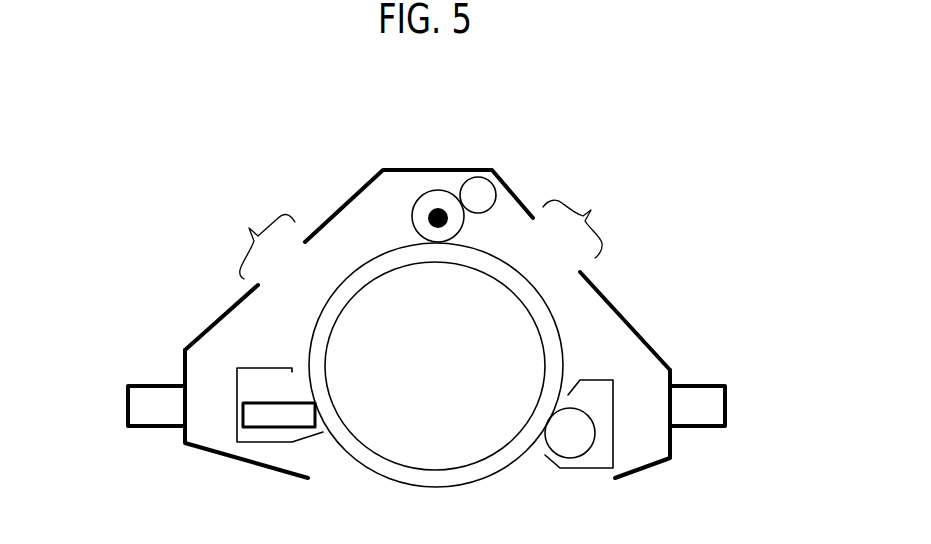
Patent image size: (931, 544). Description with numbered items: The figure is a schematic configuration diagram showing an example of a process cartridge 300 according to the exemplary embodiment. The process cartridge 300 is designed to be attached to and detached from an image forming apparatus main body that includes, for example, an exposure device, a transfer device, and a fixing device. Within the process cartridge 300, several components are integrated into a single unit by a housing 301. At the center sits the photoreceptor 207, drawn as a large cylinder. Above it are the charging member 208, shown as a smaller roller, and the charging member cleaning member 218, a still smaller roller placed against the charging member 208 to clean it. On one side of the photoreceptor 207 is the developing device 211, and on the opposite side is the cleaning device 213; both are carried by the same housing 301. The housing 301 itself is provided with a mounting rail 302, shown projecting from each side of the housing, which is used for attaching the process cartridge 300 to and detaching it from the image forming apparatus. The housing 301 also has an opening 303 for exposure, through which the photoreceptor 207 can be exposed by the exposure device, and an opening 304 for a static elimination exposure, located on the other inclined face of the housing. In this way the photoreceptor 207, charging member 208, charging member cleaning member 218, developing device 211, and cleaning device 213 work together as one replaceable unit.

The process cartridge 300 is at (480, 113).
The housing 301 is at (608, 298).
The mounting rail 302 is at (155, 385).
The opening for exposure 303 is at (586, 216).
The opening for static elimination exposure 304 is at (255, 234).
The photoreceptor 207 is at (378, 257).
The charging member 208 is at (435, 190).
The charging member cleaning member 218 is at (474, 177).
The cleaning device 213 is at (262, 367).
The developing device 211 is at (597, 380).